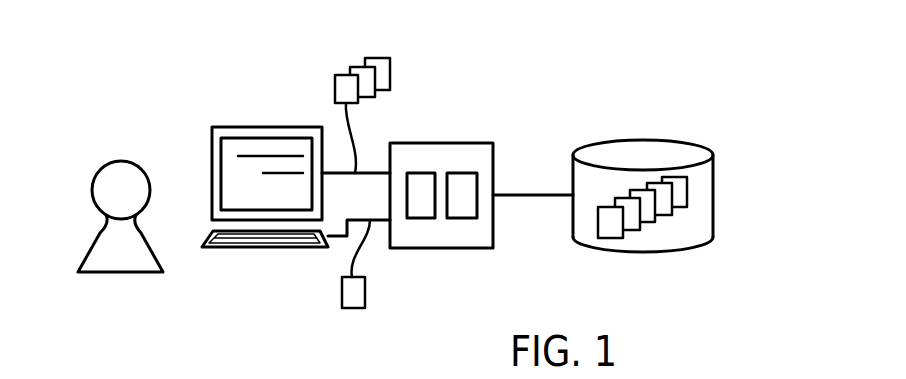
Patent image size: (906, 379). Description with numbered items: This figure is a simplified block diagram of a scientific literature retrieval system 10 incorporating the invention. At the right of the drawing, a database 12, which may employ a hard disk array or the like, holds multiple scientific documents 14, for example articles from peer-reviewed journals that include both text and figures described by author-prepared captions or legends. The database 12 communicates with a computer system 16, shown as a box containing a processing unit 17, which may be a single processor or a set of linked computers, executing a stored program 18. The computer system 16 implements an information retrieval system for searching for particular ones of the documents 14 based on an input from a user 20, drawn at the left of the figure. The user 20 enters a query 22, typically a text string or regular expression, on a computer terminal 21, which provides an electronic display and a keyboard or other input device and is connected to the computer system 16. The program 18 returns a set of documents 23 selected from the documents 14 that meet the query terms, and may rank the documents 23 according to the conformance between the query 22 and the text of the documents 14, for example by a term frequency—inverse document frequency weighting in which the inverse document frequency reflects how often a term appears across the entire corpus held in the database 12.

The scientific literature retrieval system 10 is at (722, 108).
The database 12 is at (713, 195).
The scientific documents 14 is at (610, 238).
The computer system 16 is at (440, 143).
The processing unit 17 is at (420, 218).
The stored program 18 is at (460, 218).
The user 20 is at (100, 188).
The computer terminal 21 is at (197, 90).
The query 22 is at (355, 308).
The set of documents 23 is at (372, 58).